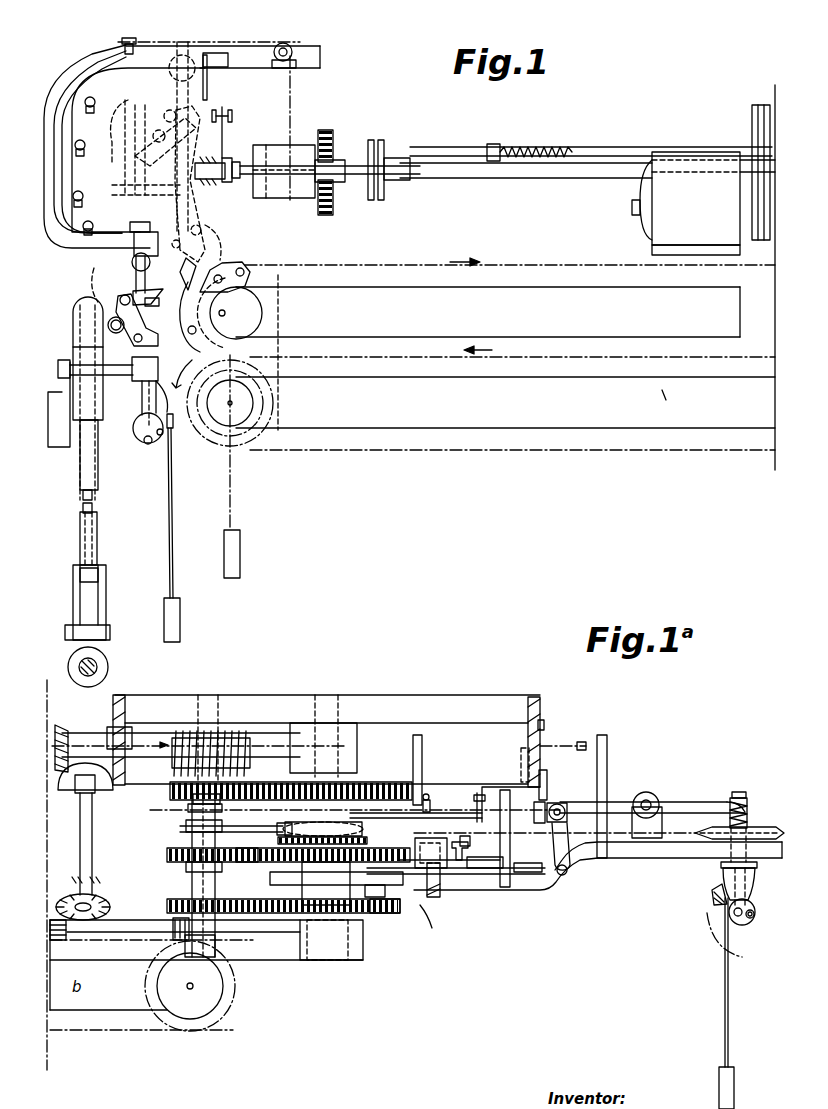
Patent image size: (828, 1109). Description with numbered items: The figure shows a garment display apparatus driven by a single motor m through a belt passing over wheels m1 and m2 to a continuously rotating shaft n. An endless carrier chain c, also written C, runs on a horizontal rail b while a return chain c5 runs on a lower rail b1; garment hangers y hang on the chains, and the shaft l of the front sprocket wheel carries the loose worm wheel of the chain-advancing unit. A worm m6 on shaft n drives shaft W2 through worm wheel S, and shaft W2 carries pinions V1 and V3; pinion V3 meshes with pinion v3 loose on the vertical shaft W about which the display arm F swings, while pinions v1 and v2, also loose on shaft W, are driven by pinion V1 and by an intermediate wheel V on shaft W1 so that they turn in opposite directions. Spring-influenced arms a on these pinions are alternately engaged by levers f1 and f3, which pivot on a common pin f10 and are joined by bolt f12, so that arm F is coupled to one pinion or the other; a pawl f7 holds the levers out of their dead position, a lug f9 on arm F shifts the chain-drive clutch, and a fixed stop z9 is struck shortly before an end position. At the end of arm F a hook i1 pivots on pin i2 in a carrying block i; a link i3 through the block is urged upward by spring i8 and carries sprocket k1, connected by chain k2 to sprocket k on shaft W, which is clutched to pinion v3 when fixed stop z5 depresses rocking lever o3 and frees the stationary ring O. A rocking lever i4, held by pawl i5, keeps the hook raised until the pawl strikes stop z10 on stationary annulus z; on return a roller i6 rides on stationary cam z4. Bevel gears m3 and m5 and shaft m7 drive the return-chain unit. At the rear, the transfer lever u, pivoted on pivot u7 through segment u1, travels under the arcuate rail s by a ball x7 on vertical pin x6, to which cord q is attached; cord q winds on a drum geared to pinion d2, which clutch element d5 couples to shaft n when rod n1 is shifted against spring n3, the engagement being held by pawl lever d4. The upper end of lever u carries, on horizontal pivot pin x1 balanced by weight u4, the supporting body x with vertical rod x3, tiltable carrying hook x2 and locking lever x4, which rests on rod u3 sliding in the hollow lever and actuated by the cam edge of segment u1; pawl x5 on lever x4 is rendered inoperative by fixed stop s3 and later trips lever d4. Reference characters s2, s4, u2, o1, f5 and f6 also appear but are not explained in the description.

In FIG. 1, the arcuate transfer rail s is at (47, 212).
In FIG. 1, the guide screws s2 is at (83, 152).
In FIG. 1, the fixed stop s3 is at (208, 95).
In FIG. 1, the guide roller s4 is at (291, 46).
In FIG. 1, the cord q is at (74, 175).
In FIG. 1, the double armed lever d4 is at (330, 132).
In FIG. 1, the pinion d2 is at (332, 195).
In FIG. 1, the clutch element d5 is at (372, 203).
In FIG. 1, the shaft n is at (500, 172).
In FIG. 1, the shiftable rod n1 is at (592, 147).
In FIG. 1, the spring n3 is at (520, 147).
In FIG. 1, the motor m is at (700, 195).
In FIG. 1, the wheel m1 is at (758, 240).
In FIG. 1, the wheel m2 is at (756, 108).
In FIG. 1, the endless chain C is at (244, 264).
In FIG. 1, the endless carrier chain c is at (336, 268).
In FIG. 1, the sprocket shaft l is at (225, 314).
In FIG. 1A, the sprocket shaft l is at (188, 989).
In FIG. 1, the horizontal rail b is at (530, 324).
In FIG. 1, the rail b1 is at (548, 410).
In FIG. 1, the return chain c5 is at (448, 452).
In FIG. 1, the ball x7 is at (146, 242).
In FIG. 1, the vertical pin x6 is at (137, 277).
In FIG. 1, the pawl x5 is at (157, 293).
In FIG. 1, the locking lever x4 is at (153, 333).
In FIG. 1, the vertical rod x3 is at (160, 360).
In FIG. 1, the supporting member x is at (140, 441).
In FIG. 1, the carrying hook x2 is at (172, 423).
In FIG. 1, the horizontal pivot pin x1 is at (60, 366).
In FIG. 1, the transfer lever u is at (78, 474).
In FIG. 1, the weight u4 is at (57, 448).
In FIG. 1, the rod u3 is at (82, 506).
In FIG. 1, the segment u1 is at (92, 602).
In FIG. 1, the cap u2 is at (76, 572).
In FIG. 1, the pivot u7 is at (112, 632).
In FIG. 1, the garment hanger y is at (172, 512).
In FIG. 1A, the garment hanger y is at (730, 1012).
In FIG. 1A, the bevel gear m3 is at (60, 726).
In FIG. 1A, the bevel gear m5 is at (104, 788).
In FIG. 1A, the shaft m7 is at (94, 864).
In FIG. 1A, the worm wheel S is at (167, 737).
In FIG. 1A, the worm m6 is at (198, 725).
In FIG. 1A, the shaft W2 is at (318, 697).
In FIG. 1A, the pinion v3 is at (360, 781).
In FIG. 1A, the pinion V3 is at (180, 798).
In FIG. 1A, the lug f9 is at (424, 768).
In FIG. 1A, the stationary annulus z is at (542, 702).
In FIG. 1A, the fixed stop z10 is at (542, 733).
In FIG. 1A, the fixed stop z9 is at (521, 752).
In FIG. 1A, the fixed stop z5 is at (486, 786).
In FIG. 1A, the stationary cam z4 is at (539, 797).
In FIG. 1A, the roller i6 is at (541, 798).
In FIG. 1A, the pawl i5 is at (568, 803).
In FIG. 1A, the rocking lever i4 is at (660, 807).
In FIG. 1A, the carrying block i is at (750, 900).
In FIG. 1A, the shuttle k1 is at (766, 829).
In FIG. 1A, the rail k2 is at (670, 834).
In FIG. 1A, the spring i8 is at (747, 812).
In FIG. 1A, the swinging arm F is at (645, 853).
In FIG. 1A, the pin i3 is at (748, 886).
In FIG. 1A, the pin i2 is at (753, 916).
In FIG. 1A, the hook i1 is at (716, 904).
In FIG. 1A, the intermediate wheel V is at (175, 860).
In FIG. 1A, the pinion V1 is at (168, 905).
In FIG. 1A, the shaft W1 is at (208, 902).
In FIG. 1A, the lever o1 is at (240, 832).
In FIG. 1A, the stationary ring O is at (290, 826).
In FIG. 1A, the sprocket wheel k is at (278, 826).
In FIG. 1A, the rocking lever o3 is at (428, 810).
In FIG. 1A, the pinion v2 is at (247, 858).
In FIG. 1A, the arm a is at (357, 867).
In FIG. 1A, the common pin f10 is at (441, 881).
In FIG. 1A, the lever f3 is at (382, 882).
In FIG. 1A, the bolt f12 is at (432, 928).
In FIG. 1A, the pinion v1 is at (390, 904).
In FIG. 1A, the lever f1 is at (489, 877).
In FIG. 1A, the block f5 is at (491, 860).
In FIG. 1A, the stop f6 is at (466, 853).
In FIG. 1A, the pawl f7 is at (534, 877).
In FIG. 1A, the vertical shaft W is at (315, 961).